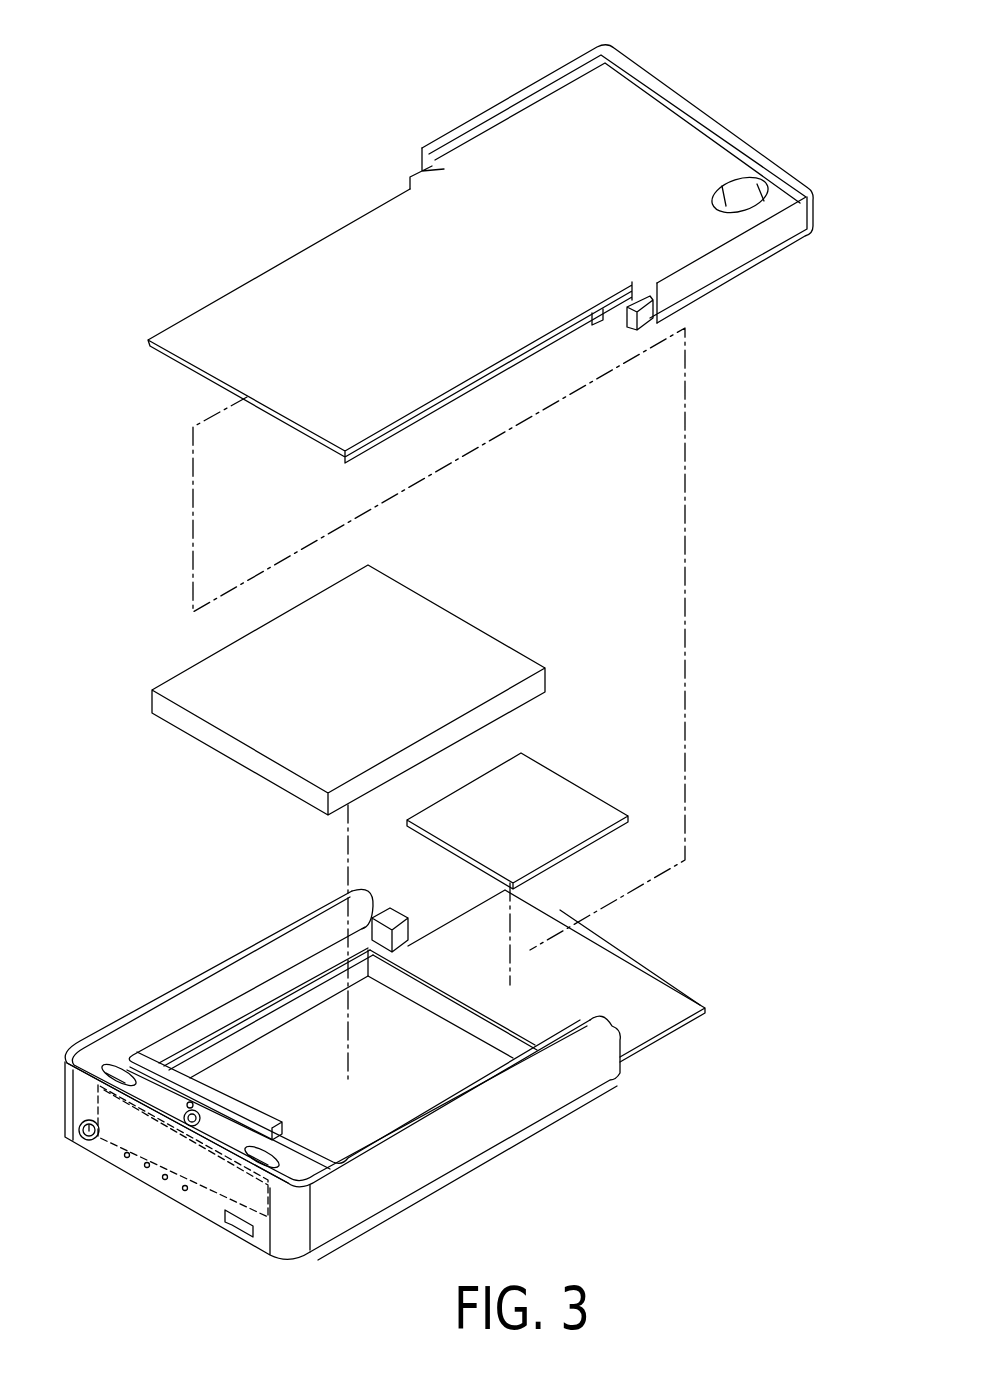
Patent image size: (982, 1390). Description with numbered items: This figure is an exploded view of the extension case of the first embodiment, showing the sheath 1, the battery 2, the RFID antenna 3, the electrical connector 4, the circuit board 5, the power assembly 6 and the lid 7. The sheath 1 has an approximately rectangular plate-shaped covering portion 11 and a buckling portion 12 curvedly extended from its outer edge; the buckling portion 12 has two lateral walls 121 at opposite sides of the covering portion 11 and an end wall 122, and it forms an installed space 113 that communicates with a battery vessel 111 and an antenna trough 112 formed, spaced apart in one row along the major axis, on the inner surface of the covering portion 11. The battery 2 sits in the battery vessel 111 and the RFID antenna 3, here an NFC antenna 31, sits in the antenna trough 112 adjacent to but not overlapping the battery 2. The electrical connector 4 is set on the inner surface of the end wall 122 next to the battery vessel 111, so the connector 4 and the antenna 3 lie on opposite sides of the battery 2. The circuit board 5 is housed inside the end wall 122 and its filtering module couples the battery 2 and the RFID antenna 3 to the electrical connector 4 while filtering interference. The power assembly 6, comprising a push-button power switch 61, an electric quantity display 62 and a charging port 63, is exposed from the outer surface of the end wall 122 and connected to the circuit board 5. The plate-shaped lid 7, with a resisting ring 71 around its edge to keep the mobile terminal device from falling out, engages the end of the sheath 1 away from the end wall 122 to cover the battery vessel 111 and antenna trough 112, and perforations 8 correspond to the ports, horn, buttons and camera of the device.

The sheath 1 is at (700, 1098).
The covering portion 11 is at (632, 1027).
The battery vessel 111 is at (412, 1045).
The antenna trough 112 is at (557, 993).
The installed space 113 is at (362, 942).
The buckling portion 12 is at (542, 1095).
The lateral walls 121 is at (195, 1000).
The end wall 122 is at (291, 1170).
The battery 2 is at (427, 635).
The radio frequency identification (RFID) antenna 3 is at (580, 708).
The near field communication (NFC) antenna 31 is at (580, 805).
The electrical connector 4 is at (228, 1112).
The circuit board 5 is at (270, 1203).
The power assembly 6 is at (65, 1236).
The power switch 61 is at (83, 1143).
The electric quantity display 62 is at (145, 1167).
The charging port 63 is at (235, 1228).
The lid 7 is at (647, 80).
The resisting ring 71 is at (545, 78).
The perforations 8 is at (742, 192).